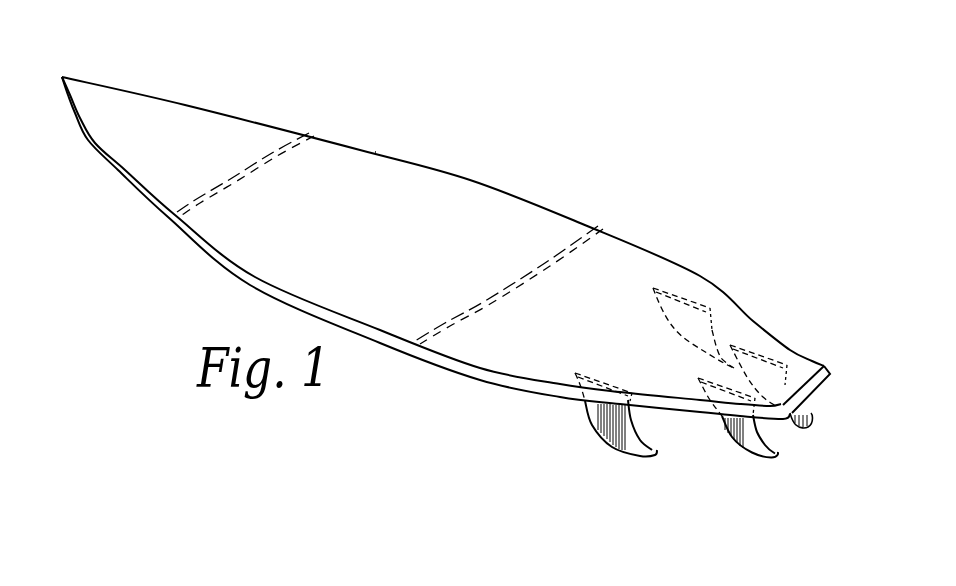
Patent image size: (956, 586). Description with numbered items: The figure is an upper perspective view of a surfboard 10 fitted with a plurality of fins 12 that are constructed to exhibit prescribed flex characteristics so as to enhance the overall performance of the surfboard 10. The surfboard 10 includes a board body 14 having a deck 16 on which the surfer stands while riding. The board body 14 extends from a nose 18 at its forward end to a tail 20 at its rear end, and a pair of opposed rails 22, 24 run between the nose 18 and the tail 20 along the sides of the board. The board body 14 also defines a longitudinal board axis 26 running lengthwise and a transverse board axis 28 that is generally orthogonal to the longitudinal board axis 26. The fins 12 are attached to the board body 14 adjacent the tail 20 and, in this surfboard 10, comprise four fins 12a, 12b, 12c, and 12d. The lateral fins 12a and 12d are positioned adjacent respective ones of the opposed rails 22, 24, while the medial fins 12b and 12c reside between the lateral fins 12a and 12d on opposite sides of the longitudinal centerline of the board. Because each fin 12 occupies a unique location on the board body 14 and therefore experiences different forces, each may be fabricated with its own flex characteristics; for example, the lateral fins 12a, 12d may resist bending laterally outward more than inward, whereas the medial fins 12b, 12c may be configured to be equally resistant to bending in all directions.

The surfboard 10 is at (500, 95).
The fins 12 is at (606, 444).
The lateral fin 12a is at (615, 440).
The medial fin 12b is at (748, 455).
The medial fin 12c is at (808, 430).
The lateral fin 12d is at (698, 298).
The board body 14 is at (323, 95).
The deck 16 is at (365, 228).
The nose 18 is at (67, 72).
The tail 20 is at (806, 368).
The rail 22 is at (205, 242).
The rail 24 is at (373, 152).
The longitudinal board axis 26 is at (732, 160).
The transverse board axis 28 is at (732, 160).